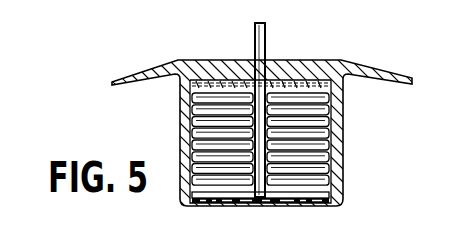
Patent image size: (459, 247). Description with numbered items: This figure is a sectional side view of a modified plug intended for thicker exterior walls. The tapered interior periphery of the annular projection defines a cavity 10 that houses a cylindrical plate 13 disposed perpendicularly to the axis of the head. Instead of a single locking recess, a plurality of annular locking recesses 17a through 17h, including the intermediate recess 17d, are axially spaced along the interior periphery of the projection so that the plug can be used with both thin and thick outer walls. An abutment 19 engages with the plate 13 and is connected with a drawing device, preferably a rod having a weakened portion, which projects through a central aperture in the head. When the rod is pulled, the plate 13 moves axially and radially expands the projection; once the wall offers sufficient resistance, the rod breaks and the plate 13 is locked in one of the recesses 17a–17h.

The cavity 10 is at (188, 119).
The locking recess 17a is at (330, 97).
The locking recess 17d is at (330, 134).
The locking recess 17h is at (336, 189).
The cylindrical plate 13 is at (300, 205).
The abutment 19 is at (254, 207).